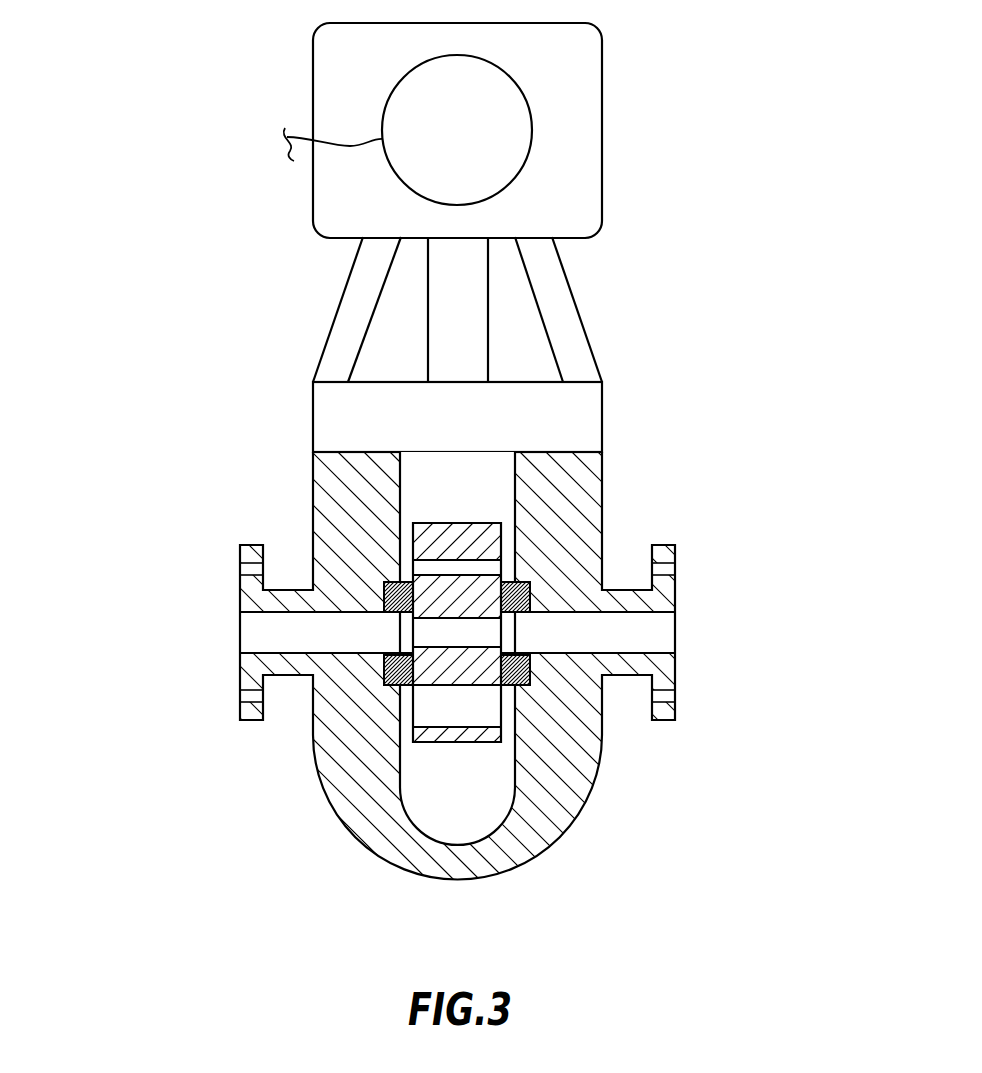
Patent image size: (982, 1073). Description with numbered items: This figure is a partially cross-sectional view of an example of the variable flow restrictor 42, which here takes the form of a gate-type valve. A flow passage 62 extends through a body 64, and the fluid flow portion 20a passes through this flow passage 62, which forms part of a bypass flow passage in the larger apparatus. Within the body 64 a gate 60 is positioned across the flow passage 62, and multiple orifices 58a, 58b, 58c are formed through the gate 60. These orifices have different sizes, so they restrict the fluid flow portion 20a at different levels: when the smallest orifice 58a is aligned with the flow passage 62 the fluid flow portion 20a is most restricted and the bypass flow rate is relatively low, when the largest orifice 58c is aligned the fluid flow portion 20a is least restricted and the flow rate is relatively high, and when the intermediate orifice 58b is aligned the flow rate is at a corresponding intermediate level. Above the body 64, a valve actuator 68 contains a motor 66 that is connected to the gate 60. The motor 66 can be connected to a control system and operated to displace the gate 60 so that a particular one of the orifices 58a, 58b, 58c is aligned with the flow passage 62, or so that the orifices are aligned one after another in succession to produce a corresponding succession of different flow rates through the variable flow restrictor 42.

The valve actuator 68 is at (313, 57).
The motor 66 is at (532, 127).
The variable flow restrictor 42 is at (788, 423).
The smallest orifice 58a is at (505, 568).
The intermediate orifice 58b is at (413, 633).
The largest orifice 58c is at (413, 710).
The gate 60 is at (442, 742).
The flow passage 62 is at (665, 625).
The body 64 is at (602, 740).
The fluid flow portion 20a is at (185, 633).